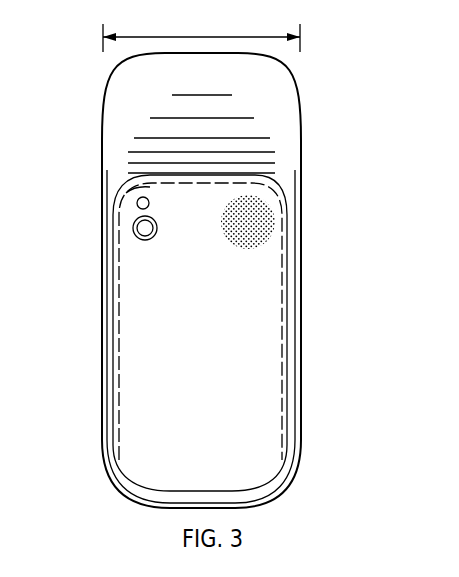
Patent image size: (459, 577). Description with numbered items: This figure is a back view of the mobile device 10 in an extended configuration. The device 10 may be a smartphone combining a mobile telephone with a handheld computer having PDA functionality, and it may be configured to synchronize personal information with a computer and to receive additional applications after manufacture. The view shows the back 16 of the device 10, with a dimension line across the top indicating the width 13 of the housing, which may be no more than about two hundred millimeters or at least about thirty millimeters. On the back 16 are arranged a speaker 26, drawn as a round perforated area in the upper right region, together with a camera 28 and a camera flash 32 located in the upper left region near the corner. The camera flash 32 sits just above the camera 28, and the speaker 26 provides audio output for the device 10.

The mobile device 10 is at (303, 73).
The width 13 is at (192, 37).
The back 16 is at (209, 374).
The speaker 26 is at (268, 214).
The camera 28 is at (141, 230).
The camera flash 32 is at (138, 201).